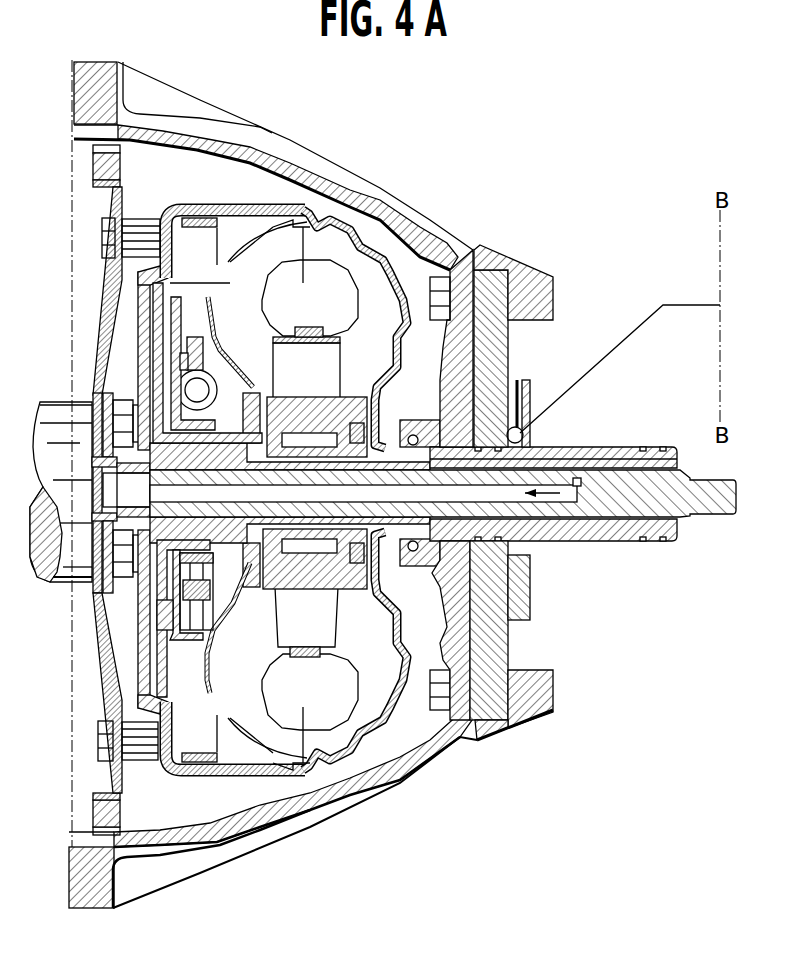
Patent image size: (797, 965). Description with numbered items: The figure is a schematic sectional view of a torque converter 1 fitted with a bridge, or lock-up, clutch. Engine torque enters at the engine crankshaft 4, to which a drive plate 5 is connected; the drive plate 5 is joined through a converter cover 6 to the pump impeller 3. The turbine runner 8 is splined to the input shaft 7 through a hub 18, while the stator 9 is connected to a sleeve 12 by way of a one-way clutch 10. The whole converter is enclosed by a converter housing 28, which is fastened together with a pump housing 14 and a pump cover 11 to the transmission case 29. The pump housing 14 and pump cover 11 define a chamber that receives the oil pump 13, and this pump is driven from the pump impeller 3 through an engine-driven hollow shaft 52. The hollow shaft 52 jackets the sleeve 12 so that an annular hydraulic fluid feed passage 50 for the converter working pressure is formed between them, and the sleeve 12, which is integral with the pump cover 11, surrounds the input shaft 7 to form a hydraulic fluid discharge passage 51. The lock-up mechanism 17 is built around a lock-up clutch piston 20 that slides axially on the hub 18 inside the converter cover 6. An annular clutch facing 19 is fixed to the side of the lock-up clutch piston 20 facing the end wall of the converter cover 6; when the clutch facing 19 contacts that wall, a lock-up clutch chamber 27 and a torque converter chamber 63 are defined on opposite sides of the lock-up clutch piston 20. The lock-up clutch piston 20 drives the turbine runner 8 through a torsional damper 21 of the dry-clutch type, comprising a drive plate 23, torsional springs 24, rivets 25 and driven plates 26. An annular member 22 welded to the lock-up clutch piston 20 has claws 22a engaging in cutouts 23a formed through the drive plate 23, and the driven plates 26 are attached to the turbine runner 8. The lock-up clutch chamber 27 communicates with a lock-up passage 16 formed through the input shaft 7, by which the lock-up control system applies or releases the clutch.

The torque converter 1 is at (304, 200).
The pump impeller 3 is at (367, 240).
The engine crankshaft 4 is at (56, 407).
The drive plate 5 is at (108, 300).
The converter cover 6 is at (143, 640).
The input shaft 7 is at (700, 503).
The turbine runner 8 is at (273, 213).
The stator 9 is at (330, 350).
The one-way clutch 10 is at (317, 400).
The pump cover 11 is at (513, 347).
The sleeve 12 is at (387, 560).
The oil pump 13 is at (521, 430).
The pump housing 14 is at (477, 632).
The lock-up passage 16 is at (577, 500).
The lock-up mechanism 17 is at (140, 275).
The hub 18 is at (215, 446).
The clutch facing 19 is at (160, 240).
The lock-up clutch piston 20 is at (158, 327).
The torsional damper 21 is at (195, 390).
The annular member 22 is at (183, 307).
The claws 22a is at (220, 343).
The drive plate 23 is at (193, 357).
The cutouts 23a is at (263, 662).
The torsional springs 24 is at (247, 387).
The rivets 25 is at (178, 590).
The driven plates 26 is at (230, 627).
The lock-up clutch chamber 27 is at (155, 617).
The converter housing 28 is at (398, 790).
The transmission case 29 is at (530, 717).
The hydraulic fluid feed passage 50 is at (397, 438).
The hydraulic fluid discharge passage 51 is at (507, 527).
The hollow shaft 52 is at (424, 395).
The torque converter chamber 63 is at (230, 220).